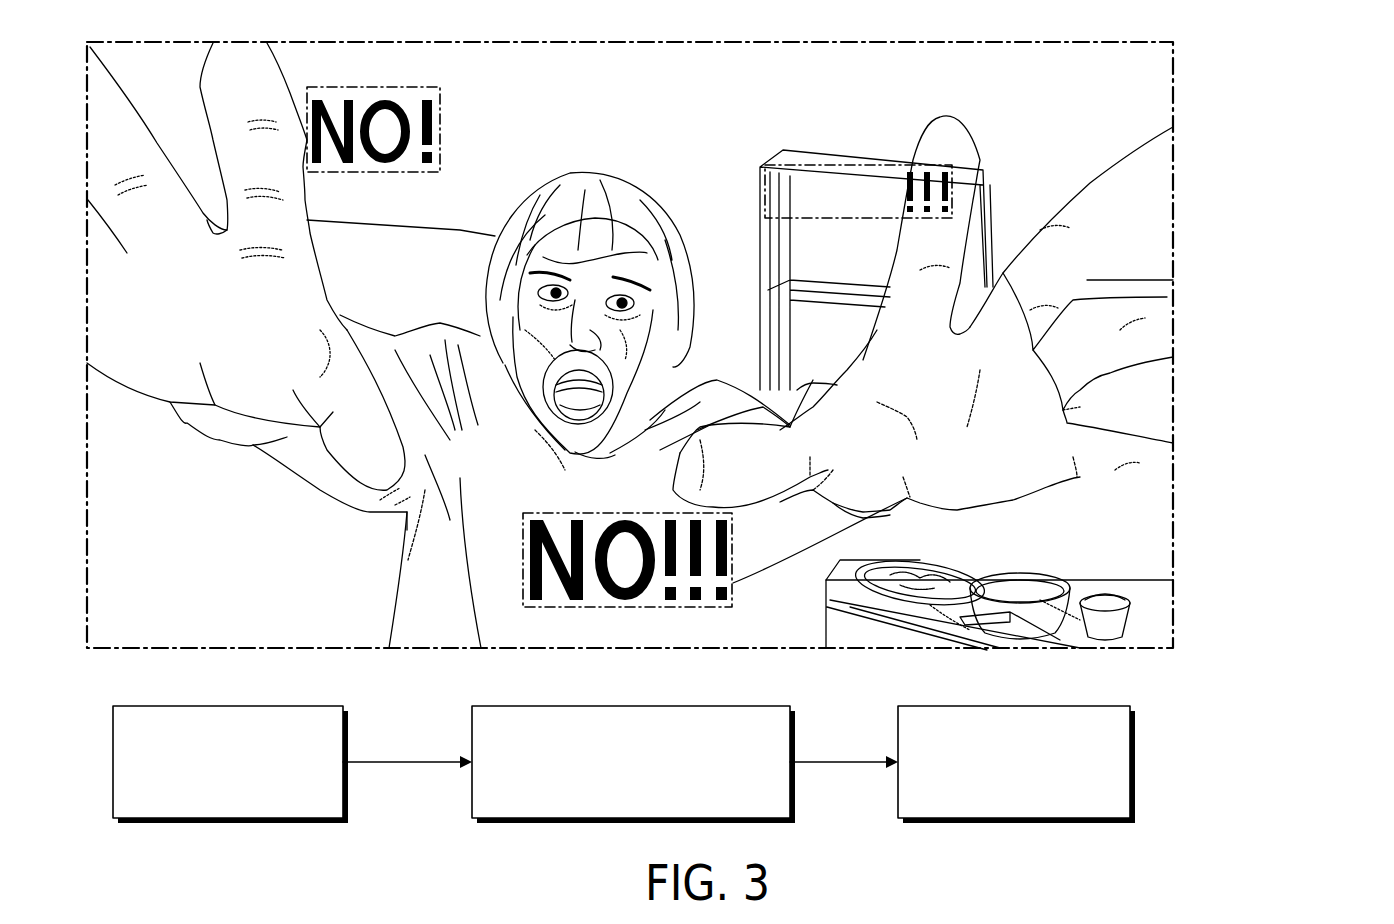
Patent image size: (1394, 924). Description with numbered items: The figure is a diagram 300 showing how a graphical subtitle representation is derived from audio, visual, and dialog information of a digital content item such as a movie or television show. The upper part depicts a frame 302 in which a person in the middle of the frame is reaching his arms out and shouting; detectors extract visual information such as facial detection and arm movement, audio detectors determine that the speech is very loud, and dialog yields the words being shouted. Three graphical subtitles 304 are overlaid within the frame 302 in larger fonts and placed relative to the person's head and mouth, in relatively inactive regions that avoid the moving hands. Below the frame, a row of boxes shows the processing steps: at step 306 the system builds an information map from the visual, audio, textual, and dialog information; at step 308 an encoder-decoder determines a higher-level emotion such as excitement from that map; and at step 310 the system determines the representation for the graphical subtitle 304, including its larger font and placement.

The diagram 300 is at (1252, 44).
The frame 302 is at (556, 40).
The graphical subtitle 304 is at (308, 118).
The step of building an information map 306 is at (230, 764).
The step of determining higher-level emotion 308 is at (633, 764).
The step of determining a representation for graphical subtitles 310 is at (1016, 764).